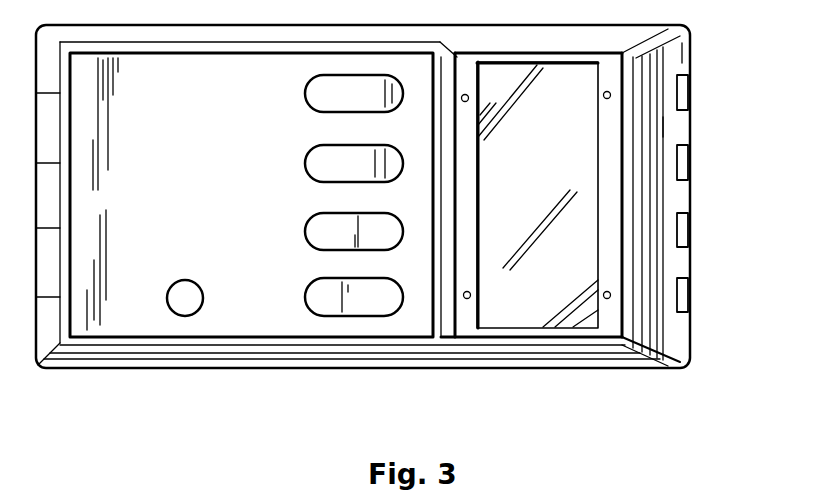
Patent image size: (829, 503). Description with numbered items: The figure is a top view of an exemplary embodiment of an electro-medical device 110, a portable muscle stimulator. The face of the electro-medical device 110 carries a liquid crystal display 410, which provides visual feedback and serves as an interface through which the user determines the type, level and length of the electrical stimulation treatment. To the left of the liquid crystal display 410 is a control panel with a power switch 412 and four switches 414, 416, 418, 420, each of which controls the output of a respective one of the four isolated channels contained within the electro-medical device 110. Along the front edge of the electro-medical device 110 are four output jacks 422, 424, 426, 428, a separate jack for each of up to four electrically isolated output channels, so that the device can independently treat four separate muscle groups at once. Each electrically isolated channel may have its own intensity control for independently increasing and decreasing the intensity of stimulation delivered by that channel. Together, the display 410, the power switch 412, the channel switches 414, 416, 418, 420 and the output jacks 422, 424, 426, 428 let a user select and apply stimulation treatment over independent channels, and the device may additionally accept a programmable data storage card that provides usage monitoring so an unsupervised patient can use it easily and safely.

The electro-medical device 110 is at (166, 196).
The liquid crystal display 410 is at (532, 185).
The power switch 412 is at (183, 322).
The switch 414 is at (296, 92).
The switch 416 is at (296, 160).
The switch 418 is at (297, 228).
The switch 420 is at (297, 296).
The output jack 422 is at (697, 93).
The output jack 424 is at (697, 163).
The output jack 426 is at (697, 230).
The output jack 428 is at (697, 297).